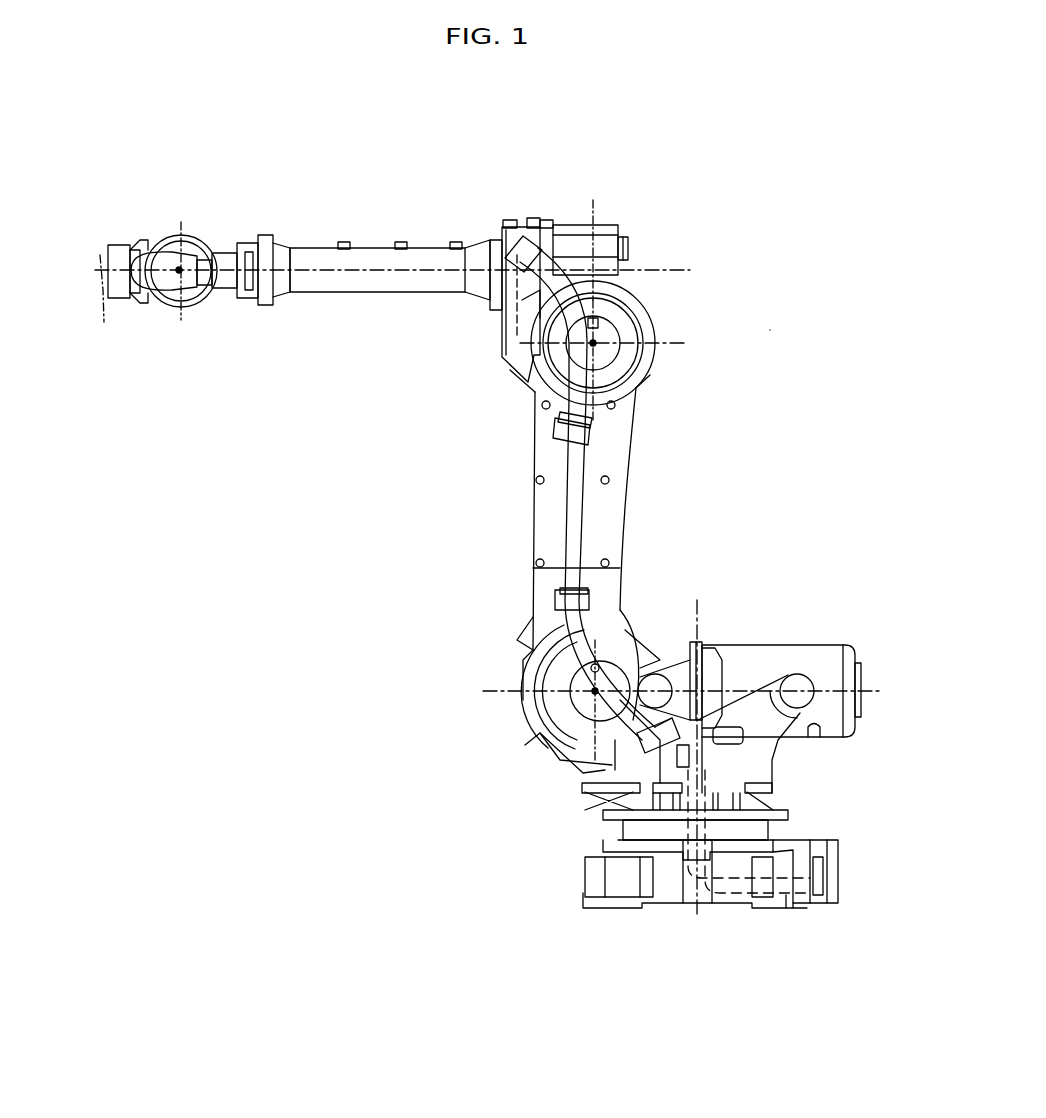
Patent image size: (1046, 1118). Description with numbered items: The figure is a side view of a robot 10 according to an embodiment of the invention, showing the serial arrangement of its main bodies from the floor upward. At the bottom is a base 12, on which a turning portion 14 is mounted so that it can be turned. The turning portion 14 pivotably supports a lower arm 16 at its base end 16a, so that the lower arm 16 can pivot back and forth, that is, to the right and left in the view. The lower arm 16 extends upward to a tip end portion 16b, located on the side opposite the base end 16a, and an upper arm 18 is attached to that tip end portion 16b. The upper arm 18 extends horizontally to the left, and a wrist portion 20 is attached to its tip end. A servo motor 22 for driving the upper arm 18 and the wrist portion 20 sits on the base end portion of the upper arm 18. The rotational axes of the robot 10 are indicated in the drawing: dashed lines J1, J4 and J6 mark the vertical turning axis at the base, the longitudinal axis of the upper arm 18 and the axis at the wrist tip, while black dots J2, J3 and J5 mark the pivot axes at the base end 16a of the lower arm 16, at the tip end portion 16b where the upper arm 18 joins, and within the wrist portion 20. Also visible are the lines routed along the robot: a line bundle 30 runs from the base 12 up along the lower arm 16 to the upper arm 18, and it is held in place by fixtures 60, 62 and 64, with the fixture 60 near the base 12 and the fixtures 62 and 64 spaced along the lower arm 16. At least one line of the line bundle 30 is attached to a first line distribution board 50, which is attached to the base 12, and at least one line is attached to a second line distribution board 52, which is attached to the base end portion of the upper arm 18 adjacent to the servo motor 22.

The robot 10 is at (780, 322).
The base 12 is at (555, 866).
The turning portion 14 is at (530, 792).
The lower arm 16 is at (505, 495).
The base end 16a is at (537, 718).
The tip end portion 16b is at (640, 382).
The upper arm 18 is at (412, 222).
The wrist portion 20 is at (203, 222).
The servo motor 22 is at (603, 222).
The line bundle 30 is at (583, 470).
The first line distribution board 50 is at (840, 870).
The second line distribution board 52 is at (498, 330).
The fixture 60 is at (605, 808).
The fixture 62 is at (590, 600).
The fixture 64 is at (590, 430).
The rotational axis J1 is at (735, 625).
The rotational axis J2 is at (595, 691).
The rotational axis J3 is at (595, 343).
The rotational axis J4 is at (371, 252).
The rotational axis J5 is at (179, 270).
The rotational axis J6 is at (102, 301).